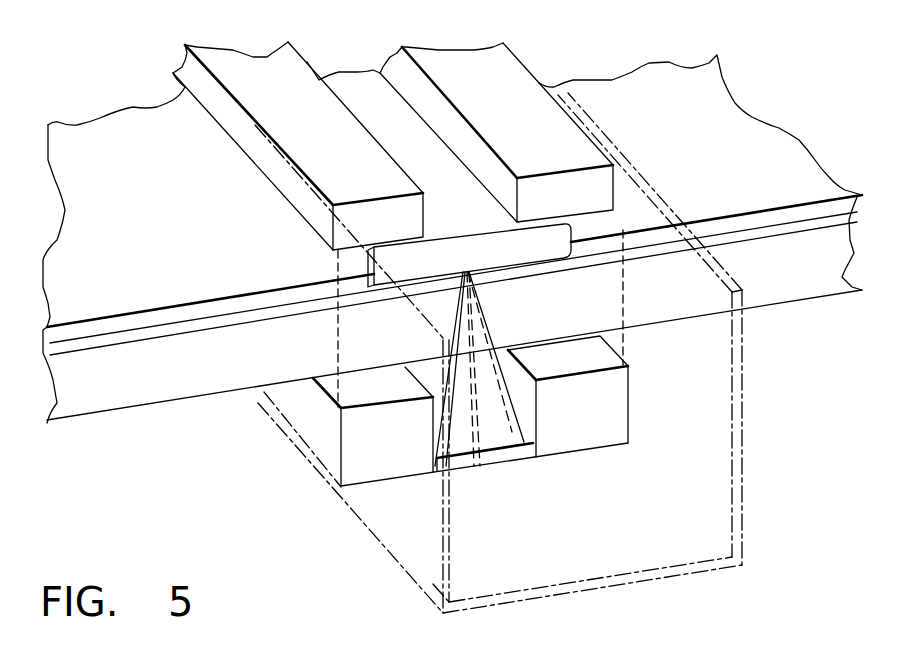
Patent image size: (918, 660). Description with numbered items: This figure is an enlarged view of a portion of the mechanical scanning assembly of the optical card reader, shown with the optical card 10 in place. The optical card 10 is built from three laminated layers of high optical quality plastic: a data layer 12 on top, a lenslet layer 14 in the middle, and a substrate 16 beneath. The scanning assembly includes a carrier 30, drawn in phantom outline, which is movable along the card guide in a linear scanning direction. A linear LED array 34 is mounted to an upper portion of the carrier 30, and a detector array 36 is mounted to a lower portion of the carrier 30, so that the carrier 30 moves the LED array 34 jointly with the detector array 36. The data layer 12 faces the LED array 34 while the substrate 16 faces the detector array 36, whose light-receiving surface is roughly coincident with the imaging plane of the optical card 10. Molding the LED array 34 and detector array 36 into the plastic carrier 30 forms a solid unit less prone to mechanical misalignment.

The optical card 10 is at (166, 228).
The data layer 12 is at (127, 320).
The lenslet layer 14 is at (267, 308).
The substrate 16 is at (157, 393).
The carrier 30 is at (373, 540).
The linear LED array 34 is at (497, 243).
The detector array 36 is at (489, 457).